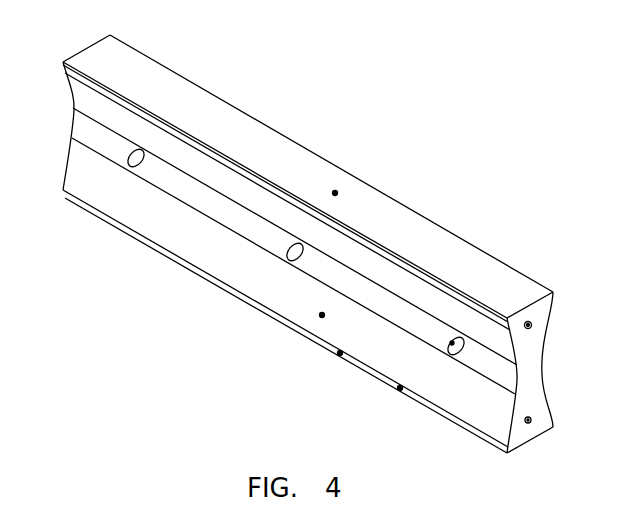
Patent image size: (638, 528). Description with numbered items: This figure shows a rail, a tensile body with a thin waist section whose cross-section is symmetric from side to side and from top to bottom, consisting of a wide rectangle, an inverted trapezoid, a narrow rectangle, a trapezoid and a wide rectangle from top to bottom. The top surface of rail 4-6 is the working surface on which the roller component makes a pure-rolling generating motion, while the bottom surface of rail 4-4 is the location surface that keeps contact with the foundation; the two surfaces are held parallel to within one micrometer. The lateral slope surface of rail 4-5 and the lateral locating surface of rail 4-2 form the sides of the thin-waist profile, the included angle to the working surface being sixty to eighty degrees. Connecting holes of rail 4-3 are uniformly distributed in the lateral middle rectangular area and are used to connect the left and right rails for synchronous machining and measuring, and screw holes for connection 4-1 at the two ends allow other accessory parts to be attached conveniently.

The screw hole for connection 4-1 is at (528, 325).
The lateral locating surface of rail 4-2 is at (400, 388).
The connecting hole of rail 4-3 is at (456, 346).
The bottom surface of rail 4-4 is at (340, 353).
The lateral slope surface of rail 4-5 is at (322, 315).
The top surface of rail 4-6 is at (335, 193).